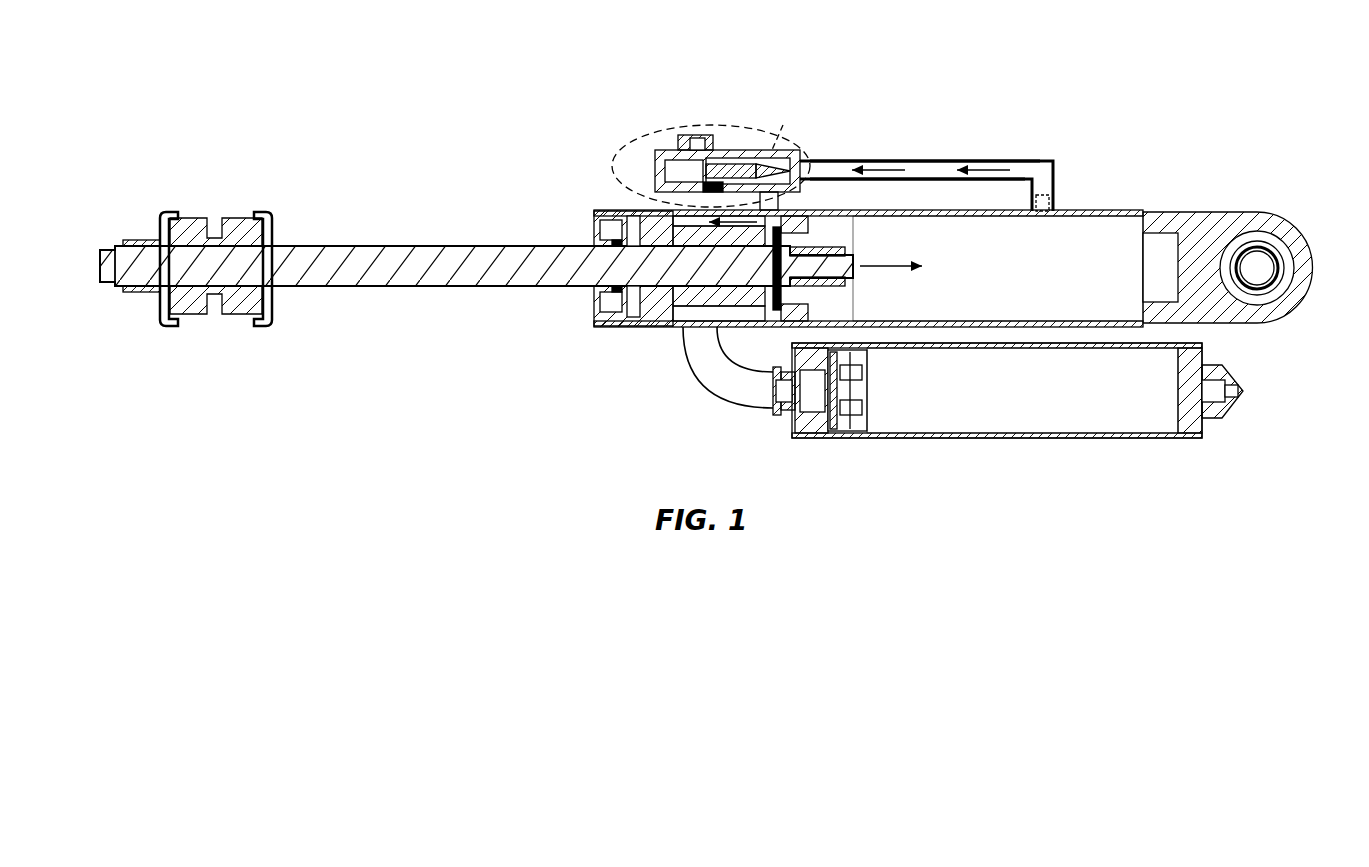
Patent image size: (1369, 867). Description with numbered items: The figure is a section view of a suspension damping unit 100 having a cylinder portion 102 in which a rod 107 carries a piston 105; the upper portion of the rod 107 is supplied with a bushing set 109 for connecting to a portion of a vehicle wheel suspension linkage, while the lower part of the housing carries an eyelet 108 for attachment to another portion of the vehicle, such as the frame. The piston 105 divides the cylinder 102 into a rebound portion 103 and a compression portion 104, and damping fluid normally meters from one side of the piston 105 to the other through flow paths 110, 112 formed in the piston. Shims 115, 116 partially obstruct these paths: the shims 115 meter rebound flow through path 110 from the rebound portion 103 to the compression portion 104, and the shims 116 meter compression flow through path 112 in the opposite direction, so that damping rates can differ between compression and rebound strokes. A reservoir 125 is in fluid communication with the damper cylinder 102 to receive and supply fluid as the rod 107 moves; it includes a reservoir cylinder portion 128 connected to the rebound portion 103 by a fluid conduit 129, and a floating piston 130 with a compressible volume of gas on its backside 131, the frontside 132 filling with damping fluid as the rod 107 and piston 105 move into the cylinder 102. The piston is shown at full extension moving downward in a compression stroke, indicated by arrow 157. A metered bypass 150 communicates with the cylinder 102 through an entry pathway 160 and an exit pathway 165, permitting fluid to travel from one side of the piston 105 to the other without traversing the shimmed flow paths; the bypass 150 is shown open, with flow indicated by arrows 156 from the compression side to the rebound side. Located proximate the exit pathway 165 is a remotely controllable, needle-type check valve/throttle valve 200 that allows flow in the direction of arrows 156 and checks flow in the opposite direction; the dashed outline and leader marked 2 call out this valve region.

The suspension damping unit 100 is at (215, 163).
The cylinder portion 102 is at (1143, 214).
The rebound portion 103 is at (705, 318).
The compression portion 104 is at (1085, 304).
The piston 105 is at (100, 285).
The rod 107 is at (404, 245).
The eyelet 108 is at (1257, 262).
The bushing set 109 is at (245, 320).
The flow path 110 is at (812, 243).
The flow path 112 is at (812, 297).
The shims 115 is at (810, 224).
The shims 116 is at (719, 268).
The reservoir 125 is at (1183, 458).
The reservoir cylinder portion 128 is at (1073, 440).
The fluid conduit 129 is at (712, 392).
The floating piston 130 is at (852, 440).
The backside 131 is at (1042, 402).
The frontside 132 is at (782, 403).
The bypass 150 is at (1077, 133).
The flow arrows 156 is at (805, 160).
The arrow 157 is at (893, 267).
The entry pathway 160 is at (1056, 225).
The exit pathway 165 is at (656, 206).
The needle-type check valve/throttle valve 200 is at (694, 97).
The section detail 2 is at (775, 140).